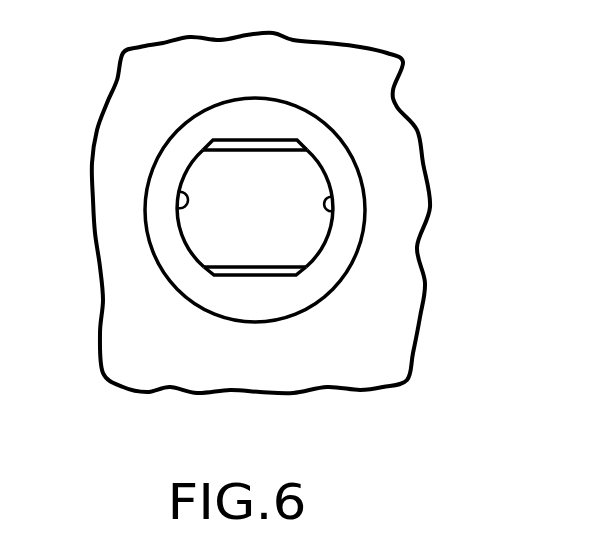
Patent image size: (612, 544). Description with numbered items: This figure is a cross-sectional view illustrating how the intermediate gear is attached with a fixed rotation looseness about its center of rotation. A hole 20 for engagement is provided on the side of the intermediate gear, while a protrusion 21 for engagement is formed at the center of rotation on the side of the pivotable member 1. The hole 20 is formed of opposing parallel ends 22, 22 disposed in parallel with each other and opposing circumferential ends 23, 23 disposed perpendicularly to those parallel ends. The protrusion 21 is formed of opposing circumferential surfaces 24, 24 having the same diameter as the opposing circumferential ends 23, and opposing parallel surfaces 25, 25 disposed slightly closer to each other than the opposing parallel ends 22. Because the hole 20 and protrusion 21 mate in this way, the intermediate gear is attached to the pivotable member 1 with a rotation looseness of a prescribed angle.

The pivotable member 1 is at (403, 137).
The hole 20 is at (307, 277).
The protrusion 21 is at (308, 182).
The opposing parallel ends 22 is at (182, 197).
The opposing circumferential ends 23 is at (228, 146).
The opposing circumferential surfaces 24 is at (183, 250).
The opposing parallel surfaces 25 is at (262, 143).